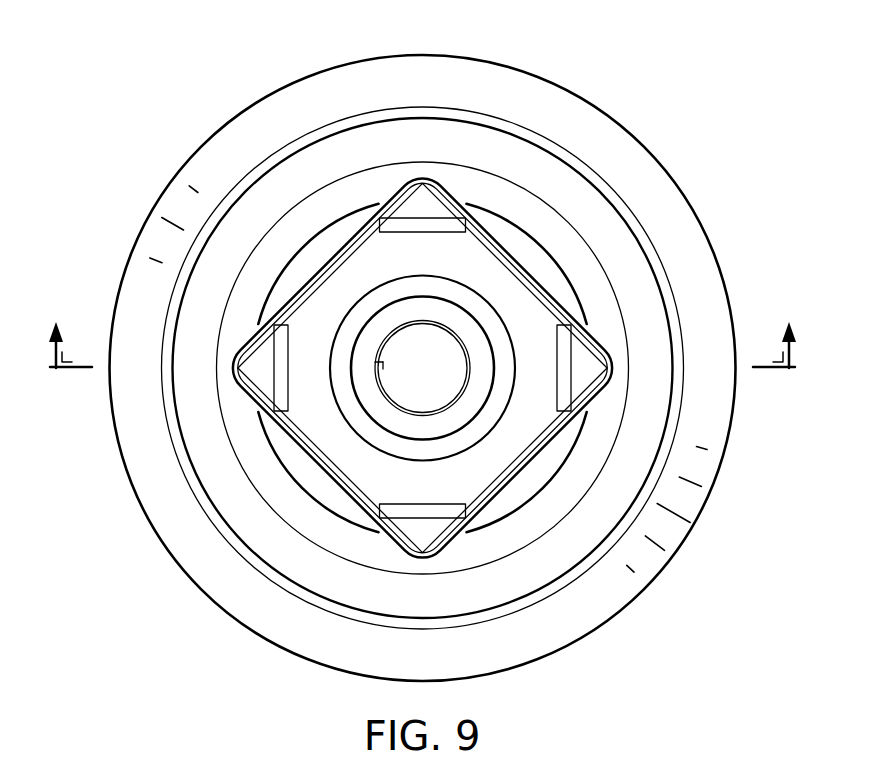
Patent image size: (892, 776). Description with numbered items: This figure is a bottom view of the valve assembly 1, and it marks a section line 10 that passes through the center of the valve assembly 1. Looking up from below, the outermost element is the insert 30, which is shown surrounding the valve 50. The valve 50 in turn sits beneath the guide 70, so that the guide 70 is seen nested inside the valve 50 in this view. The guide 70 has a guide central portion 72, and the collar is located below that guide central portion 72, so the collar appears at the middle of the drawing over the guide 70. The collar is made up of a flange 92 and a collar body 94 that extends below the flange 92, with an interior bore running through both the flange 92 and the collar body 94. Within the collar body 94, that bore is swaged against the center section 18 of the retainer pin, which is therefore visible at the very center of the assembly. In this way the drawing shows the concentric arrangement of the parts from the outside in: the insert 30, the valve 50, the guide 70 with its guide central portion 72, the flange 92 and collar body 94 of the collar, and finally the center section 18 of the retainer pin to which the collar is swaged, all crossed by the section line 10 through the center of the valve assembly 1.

The valve assembly 1 is at (718, 66).
The section line 10 is at (423, 329).
The center section 18 is at (410, 342).
The insert 30 is at (110, 448).
The valve 50 is at (236, 557).
The guide 70 is at (462, 568).
The guide central portion 72 is at (462, 483).
The flange 92 is at (470, 283).
The collar body 94 is at (490, 340).